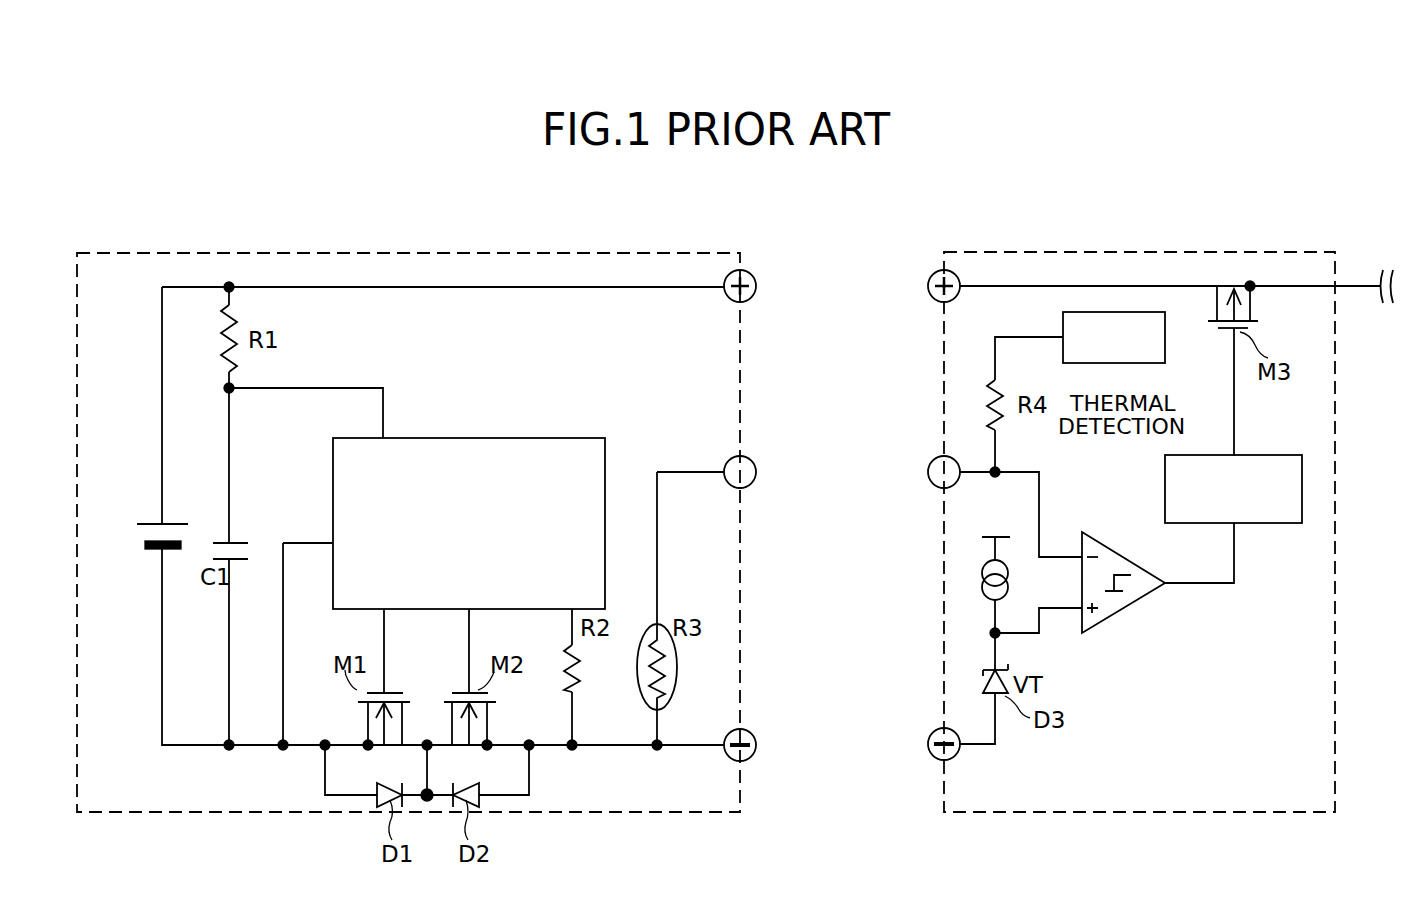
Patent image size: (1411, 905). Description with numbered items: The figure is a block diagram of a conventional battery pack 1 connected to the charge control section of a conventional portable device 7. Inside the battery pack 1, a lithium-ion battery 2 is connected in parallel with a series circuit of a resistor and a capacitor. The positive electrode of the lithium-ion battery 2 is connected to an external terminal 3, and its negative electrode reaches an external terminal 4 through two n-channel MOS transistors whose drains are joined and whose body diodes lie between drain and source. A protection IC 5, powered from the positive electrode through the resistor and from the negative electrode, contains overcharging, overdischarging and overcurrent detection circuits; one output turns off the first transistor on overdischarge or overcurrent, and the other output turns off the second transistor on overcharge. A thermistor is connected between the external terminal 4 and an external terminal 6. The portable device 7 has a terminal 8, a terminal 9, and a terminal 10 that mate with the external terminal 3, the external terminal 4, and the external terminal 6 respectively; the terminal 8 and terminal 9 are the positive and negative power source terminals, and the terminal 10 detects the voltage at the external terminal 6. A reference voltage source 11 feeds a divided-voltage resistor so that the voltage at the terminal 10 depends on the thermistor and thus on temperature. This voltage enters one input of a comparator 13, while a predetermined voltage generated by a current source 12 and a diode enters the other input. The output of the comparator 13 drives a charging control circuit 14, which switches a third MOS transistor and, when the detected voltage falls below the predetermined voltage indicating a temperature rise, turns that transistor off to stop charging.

The battery pack 1 is at (551, 246).
The lithium-ion battery 2 is at (144, 533).
The external terminal 3 is at (757, 286).
The external terminal 4 is at (757, 745).
The protection IC 5 is at (575, 437).
The external terminal 6 is at (757, 472).
The portable device 7 is at (1188, 254).
The terminal 8 is at (927, 286).
The terminal 9 is at (927, 744).
The terminal 10 is at (927, 472).
The reference voltage source Vref1 11 is at (1165, 350).
The current source 12 is at (1009, 580).
The comparator 13 is at (1130, 610).
The charging control circuit 14 is at (1270, 524).